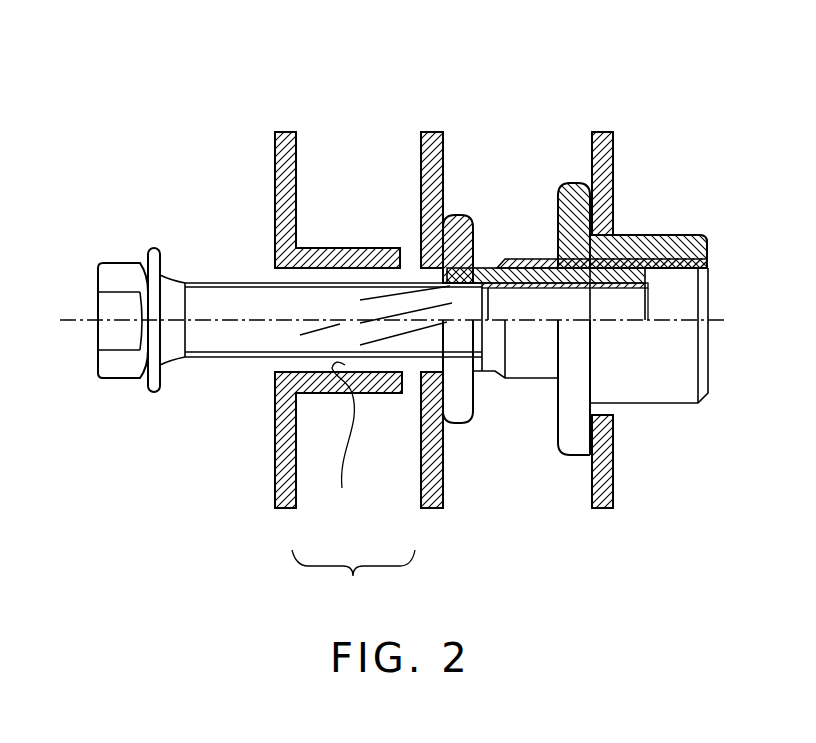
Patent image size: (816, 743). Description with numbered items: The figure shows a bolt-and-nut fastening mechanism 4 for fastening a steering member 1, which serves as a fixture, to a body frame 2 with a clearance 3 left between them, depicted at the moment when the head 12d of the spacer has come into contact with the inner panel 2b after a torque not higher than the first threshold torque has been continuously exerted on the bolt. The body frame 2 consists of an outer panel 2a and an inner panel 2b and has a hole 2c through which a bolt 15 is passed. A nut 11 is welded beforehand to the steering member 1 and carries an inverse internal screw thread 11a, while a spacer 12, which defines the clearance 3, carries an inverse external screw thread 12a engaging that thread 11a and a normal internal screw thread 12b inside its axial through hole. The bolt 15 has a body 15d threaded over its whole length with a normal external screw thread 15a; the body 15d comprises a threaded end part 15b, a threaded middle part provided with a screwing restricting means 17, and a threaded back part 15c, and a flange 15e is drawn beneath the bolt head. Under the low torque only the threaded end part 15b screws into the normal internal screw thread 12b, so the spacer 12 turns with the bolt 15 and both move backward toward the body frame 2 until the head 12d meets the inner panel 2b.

The steering member 1 is at (615, 473).
The body frame 2 is at (353, 581).
The outer panel 2a is at (300, 467).
The inner panel 2b is at (425, 470).
The hole 2c is at (348, 444).
The clearance 3 is at (540, 212).
The bolt-and-nut fastening mechanism 4 is at (362, 122).
The nut 11 is at (655, 380).
The inverse internal screw thread 11a is at (683, 268).
The spacer 12 is at (522, 352).
The inverse external screw thread 12a is at (525, 258).
The normal internal screw thread 12b is at (600, 288).
The head 12d is at (445, 427).
The bolt 15 is at (113, 321).
The normal external screw thread 15a is at (224, 282).
The threaded end part 15b is at (462, 307).
The threaded back part 15c is at (292, 313).
The body 15d is at (222, 323).
The bolt flange 15e is at (170, 282).
The screwing restricting means 17 is at (403, 320).